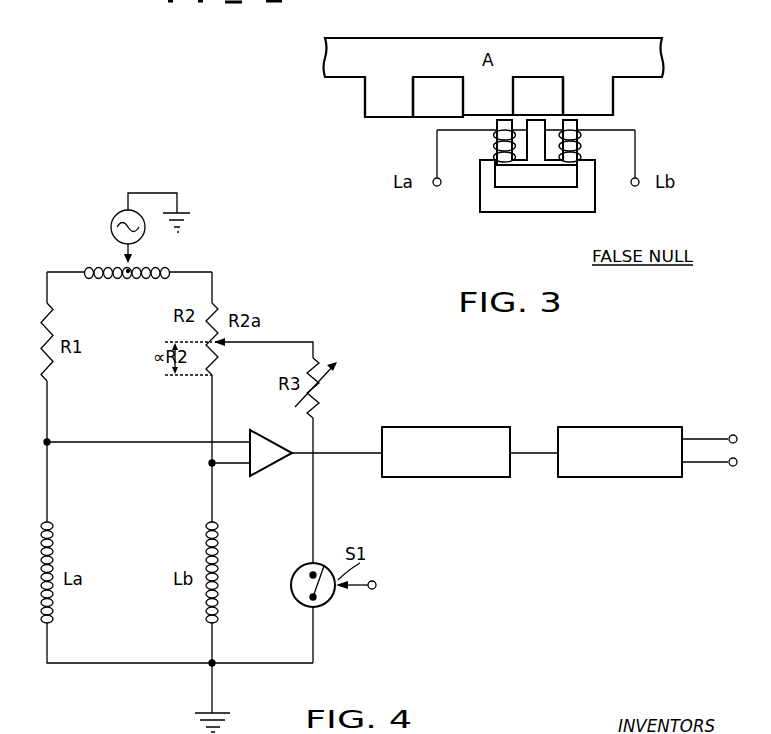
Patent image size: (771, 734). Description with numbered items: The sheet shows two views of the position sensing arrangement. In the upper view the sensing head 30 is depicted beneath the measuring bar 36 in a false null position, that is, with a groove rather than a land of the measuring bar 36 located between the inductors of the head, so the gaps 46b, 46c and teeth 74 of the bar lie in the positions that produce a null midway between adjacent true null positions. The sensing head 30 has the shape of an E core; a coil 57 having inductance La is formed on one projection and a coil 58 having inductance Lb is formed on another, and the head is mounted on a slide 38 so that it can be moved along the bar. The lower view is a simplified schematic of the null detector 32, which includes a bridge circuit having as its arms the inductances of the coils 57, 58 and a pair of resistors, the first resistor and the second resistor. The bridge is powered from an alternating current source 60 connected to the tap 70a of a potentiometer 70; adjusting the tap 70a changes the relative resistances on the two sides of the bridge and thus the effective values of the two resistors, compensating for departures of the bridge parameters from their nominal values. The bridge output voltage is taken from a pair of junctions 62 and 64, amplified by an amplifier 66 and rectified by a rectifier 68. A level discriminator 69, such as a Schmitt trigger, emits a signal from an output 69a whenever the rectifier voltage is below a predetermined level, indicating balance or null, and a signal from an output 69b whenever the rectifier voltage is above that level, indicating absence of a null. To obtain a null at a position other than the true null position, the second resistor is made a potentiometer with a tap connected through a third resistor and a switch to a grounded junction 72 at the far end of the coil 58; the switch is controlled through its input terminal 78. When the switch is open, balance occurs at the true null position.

In FIG. 3, the sensing head 30 is at (502, 166).
In FIG. 4, the null detector 32 is at (288, 321).
In FIG. 3, the measuring bar 36 is at (580, 53).
In FIG. 3, the slide 38 is at (492, 203).
In FIG. 3, the tooth gap 46b is at (605, 100).
In FIG. 3, the tooth gap 46c is at (472, 98).
In FIG. 3, the coil 57 is at (502, 163).
In FIG. 4, the coil 57 is at (42, 575).
In FIG. 3, the coil 58 is at (570, 163).
In FIG. 4, the coil 58 is at (220, 553).
In FIG. 4, the alternating current source 60 is at (110, 229).
In FIG. 4, the junction 62 is at (50, 440).
In FIG. 4, the junction 64 is at (210, 465).
In FIG. 4, the amplifier 66 is at (270, 461).
In FIG. 4, the rectifier 68 is at (437, 427).
In FIG. 4, the level discriminator 69 is at (617, 427).
In FIG. 4, the output 69a is at (683, 463).
In FIG. 4, the output 69b is at (683, 438).
In FIG. 4, the potentiometer 70 is at (152, 280).
In FIG. 4, the tap 70a is at (133, 264).
In FIG. 4, the grounded junction 72 is at (215, 661).
In FIG. 3, the teeth 74 is at (434, 92).
In FIG. 4, the input terminal 78 is at (374, 581).